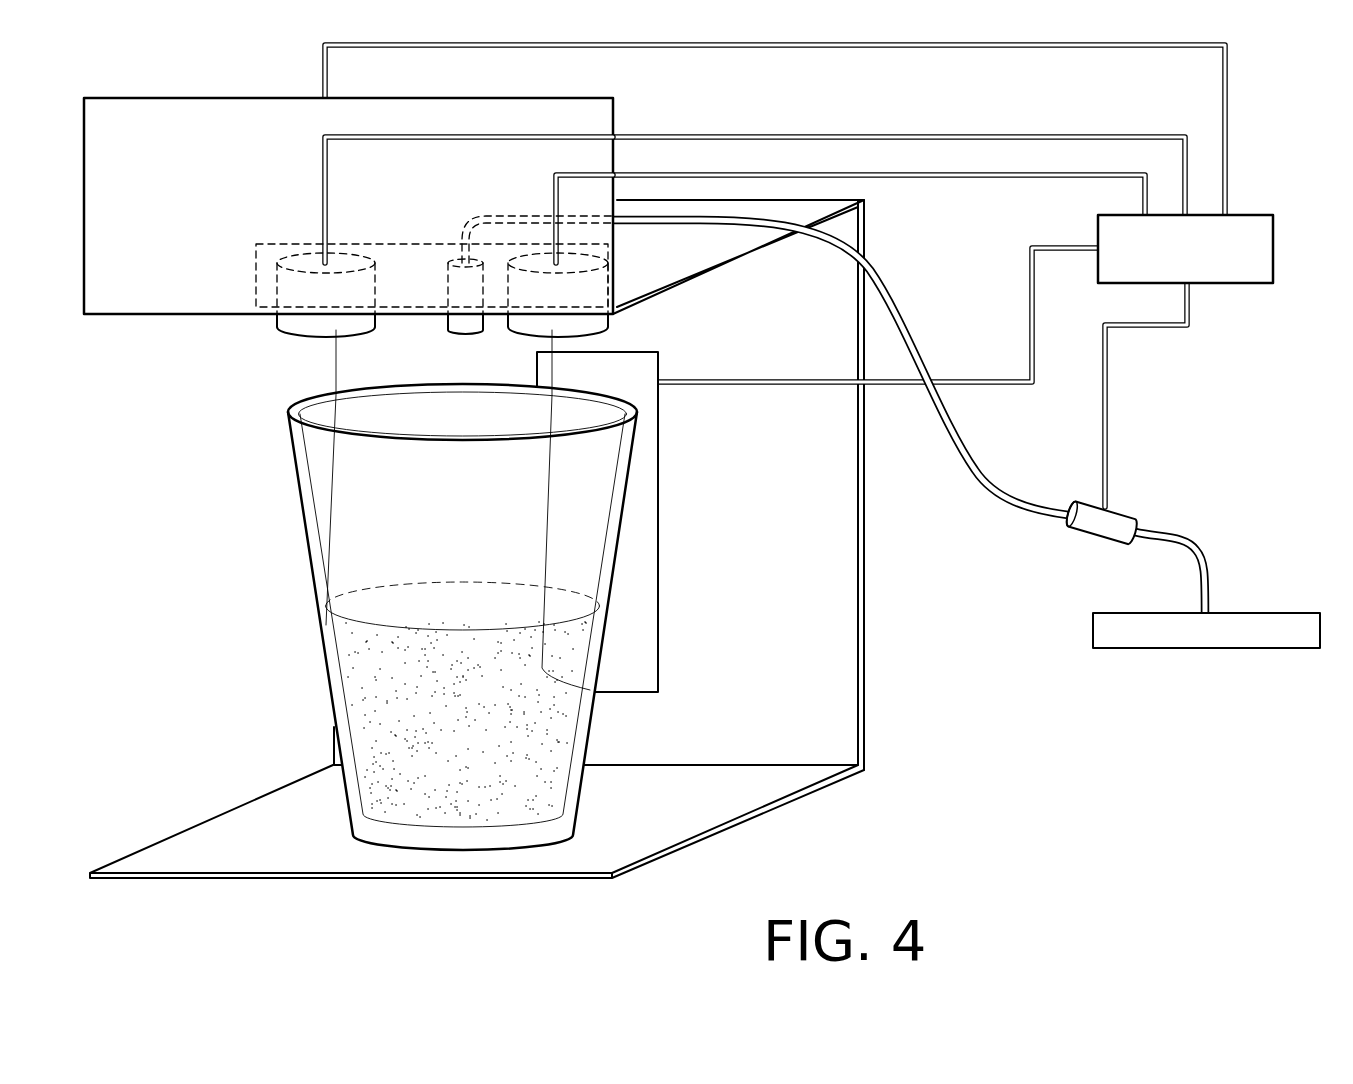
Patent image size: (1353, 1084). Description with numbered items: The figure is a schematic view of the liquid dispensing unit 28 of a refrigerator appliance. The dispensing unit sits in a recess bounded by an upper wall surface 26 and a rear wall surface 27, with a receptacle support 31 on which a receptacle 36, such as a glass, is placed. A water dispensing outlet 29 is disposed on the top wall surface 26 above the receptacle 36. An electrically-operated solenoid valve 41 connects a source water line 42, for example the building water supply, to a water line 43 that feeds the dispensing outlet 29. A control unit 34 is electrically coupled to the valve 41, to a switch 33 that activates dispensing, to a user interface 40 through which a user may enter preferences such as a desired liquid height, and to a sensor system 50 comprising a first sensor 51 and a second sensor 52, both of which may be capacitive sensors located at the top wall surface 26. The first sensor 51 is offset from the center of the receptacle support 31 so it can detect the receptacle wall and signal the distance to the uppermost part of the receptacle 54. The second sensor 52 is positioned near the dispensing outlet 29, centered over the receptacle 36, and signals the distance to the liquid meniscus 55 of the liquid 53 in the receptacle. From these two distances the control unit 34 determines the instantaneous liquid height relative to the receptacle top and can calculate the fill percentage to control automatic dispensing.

The upper wall surface 26 is at (702, 263).
The rear wall surface 27 is at (789, 712).
The liquid dispensing unit 28 is at (702, 461).
The water dispensing outlet 29 is at (472, 333).
The receptacle support 31 is at (279, 855).
The switch 33 is at (660, 428).
The control unit 34 is at (1250, 285).
The receptacle 36 is at (297, 485).
The user interface 40 is at (138, 191).
The electrically-operated valve 41 is at (1092, 540).
The source water line 42 is at (1268, 614).
The water line 43 is at (990, 492).
The sensor system 50 is at (256, 250).
The first sensor 51 is at (296, 333).
The second sensor 52 is at (606, 320).
The liquid 53 is at (510, 752).
The uppermost part of the receptacle 54 is at (390, 385).
The liquid meniscus 55 is at (330, 612).